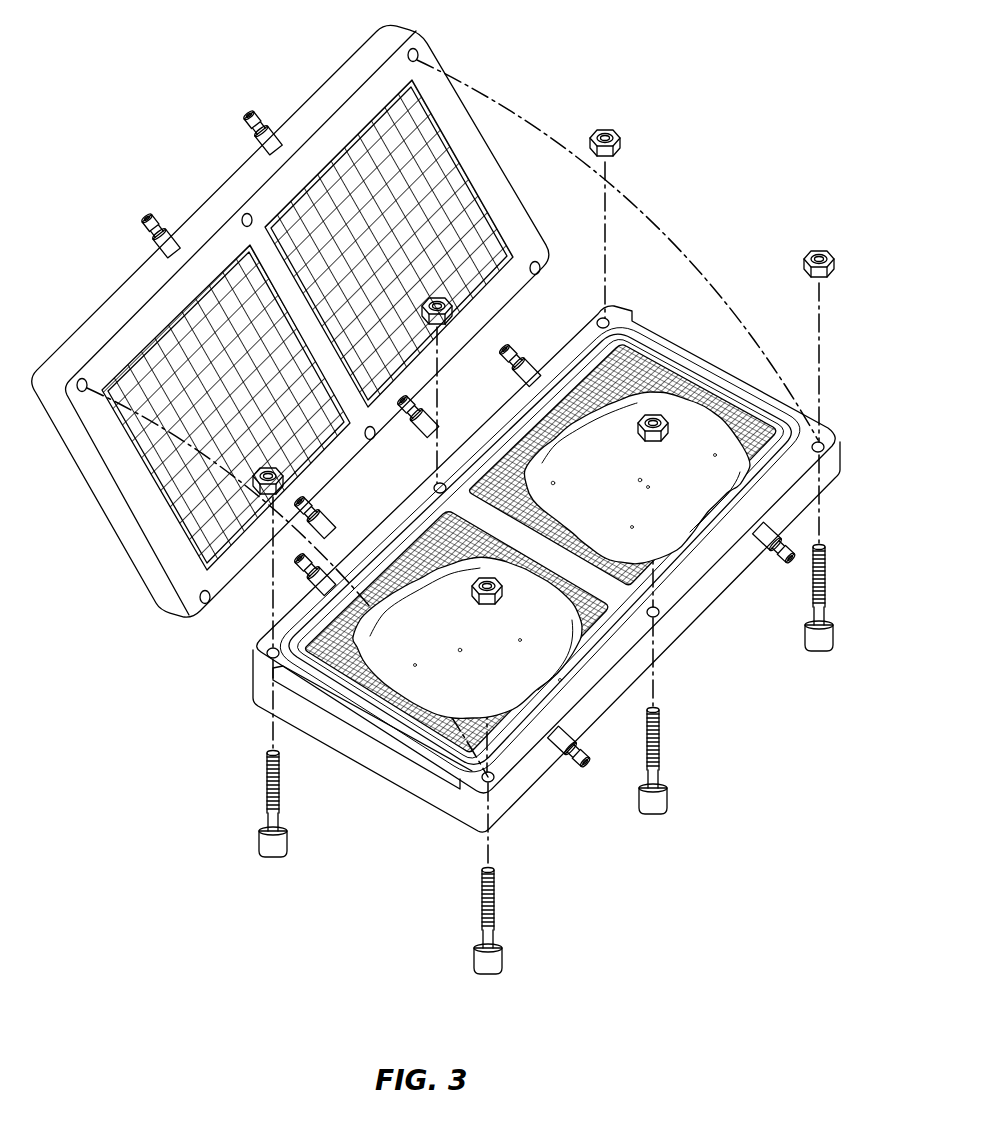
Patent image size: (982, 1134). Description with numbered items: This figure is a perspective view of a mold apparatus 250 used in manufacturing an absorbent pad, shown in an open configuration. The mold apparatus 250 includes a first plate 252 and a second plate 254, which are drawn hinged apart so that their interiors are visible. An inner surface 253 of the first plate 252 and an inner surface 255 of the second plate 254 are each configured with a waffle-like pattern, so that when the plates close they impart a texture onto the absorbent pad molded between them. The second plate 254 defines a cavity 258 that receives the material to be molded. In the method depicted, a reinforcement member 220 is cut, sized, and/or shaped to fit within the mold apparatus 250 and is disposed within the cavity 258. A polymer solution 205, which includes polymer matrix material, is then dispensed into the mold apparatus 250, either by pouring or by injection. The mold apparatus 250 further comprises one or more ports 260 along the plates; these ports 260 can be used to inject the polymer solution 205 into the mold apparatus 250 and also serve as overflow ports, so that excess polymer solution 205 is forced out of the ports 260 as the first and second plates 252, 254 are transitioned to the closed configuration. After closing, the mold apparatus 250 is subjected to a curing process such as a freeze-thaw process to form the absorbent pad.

The mold apparatus 250 is at (176, 161).
The first plate 252 is at (343, 77).
The inner surface of the first plate 253 is at (160, 347).
The second plate 254 is at (386, 767).
The inner surface of the second plate 255 is at (328, 650).
The cavity 258 is at (623, 385).
The polymer solution 205 is at (675, 508).
The reinforcement member 220 is at (652, 652).
The ports 260 is at (565, 757).